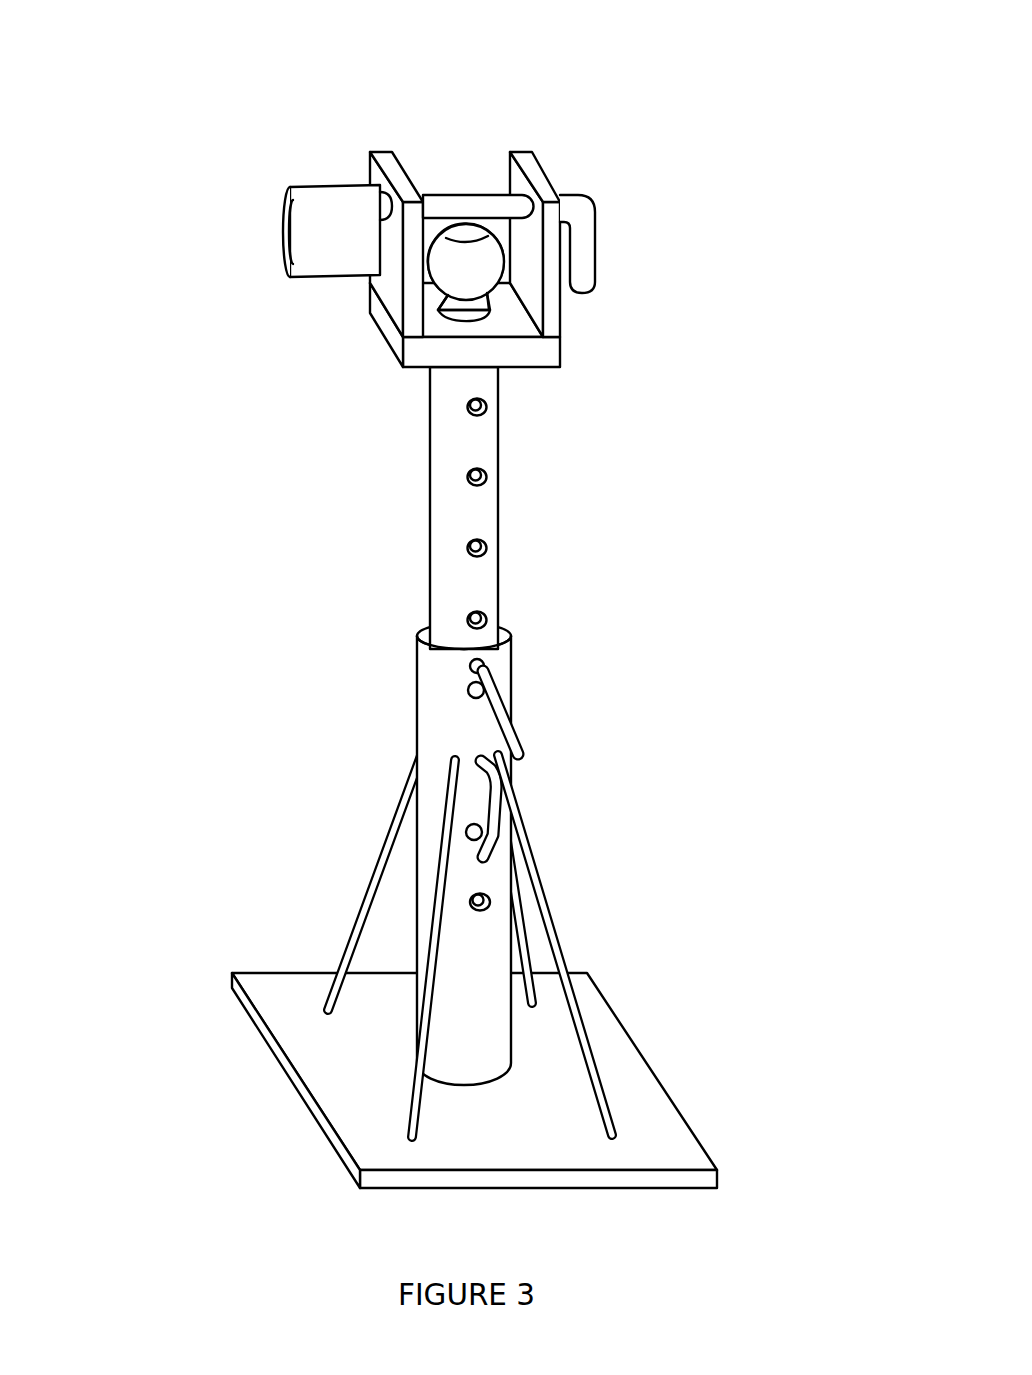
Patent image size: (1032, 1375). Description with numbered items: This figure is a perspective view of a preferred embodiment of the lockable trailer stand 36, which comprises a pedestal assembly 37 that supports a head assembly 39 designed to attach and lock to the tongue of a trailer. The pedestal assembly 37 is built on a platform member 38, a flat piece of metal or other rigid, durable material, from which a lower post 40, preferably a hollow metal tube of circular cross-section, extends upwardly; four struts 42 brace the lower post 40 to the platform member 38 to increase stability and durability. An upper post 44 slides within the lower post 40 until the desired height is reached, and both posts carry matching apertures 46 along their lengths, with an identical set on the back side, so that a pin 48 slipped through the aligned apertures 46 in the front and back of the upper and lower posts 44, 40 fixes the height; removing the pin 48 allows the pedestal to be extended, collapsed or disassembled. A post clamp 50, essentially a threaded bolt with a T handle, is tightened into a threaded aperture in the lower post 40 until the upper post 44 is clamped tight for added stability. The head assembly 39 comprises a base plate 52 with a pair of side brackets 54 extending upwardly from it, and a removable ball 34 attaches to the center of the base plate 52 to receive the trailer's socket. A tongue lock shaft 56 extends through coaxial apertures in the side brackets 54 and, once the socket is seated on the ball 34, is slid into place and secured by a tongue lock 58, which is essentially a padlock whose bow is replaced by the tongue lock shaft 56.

The removable ball 34 is at (495, 600).
The lockable trailer stand 36 is at (495, 600).
The pedestal assembly 37 is at (495, 777).
The platform member 38 is at (350, 1070).
The head assembly 39 is at (517, 231).
The lower post 40 is at (427, 726).
The struts 42 is at (492, 762).
The upper post 44 is at (444, 508).
The apertures 46 is at (468, 410).
The pin 48 is at (493, 850).
The post clamp 50 is at (513, 733).
The base plate 52 is at (484, 231).
The side brackets 54 is at (383, 152).
The tongue lock shaft 56 is at (477, 197).
The tongue lock 58 is at (327, 190).